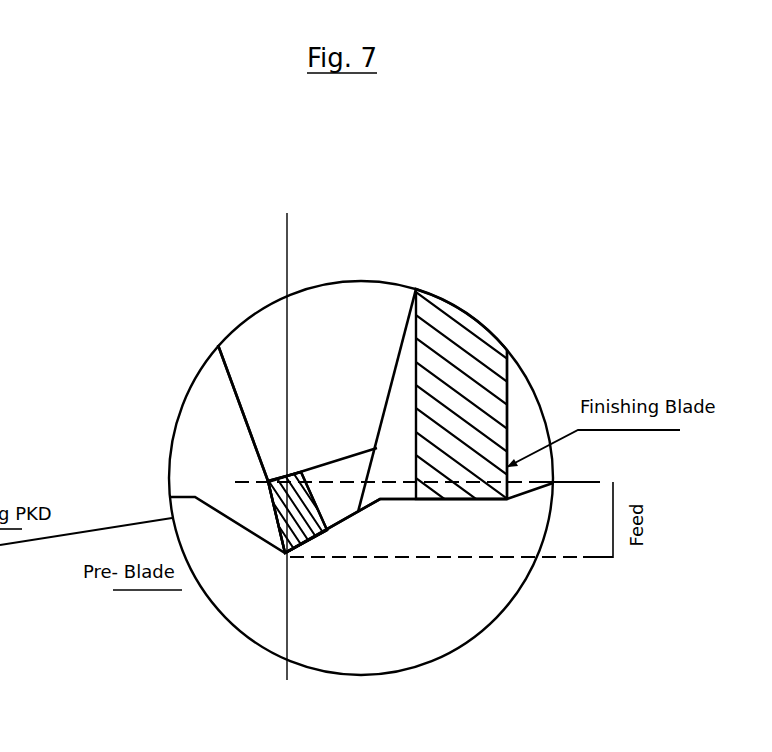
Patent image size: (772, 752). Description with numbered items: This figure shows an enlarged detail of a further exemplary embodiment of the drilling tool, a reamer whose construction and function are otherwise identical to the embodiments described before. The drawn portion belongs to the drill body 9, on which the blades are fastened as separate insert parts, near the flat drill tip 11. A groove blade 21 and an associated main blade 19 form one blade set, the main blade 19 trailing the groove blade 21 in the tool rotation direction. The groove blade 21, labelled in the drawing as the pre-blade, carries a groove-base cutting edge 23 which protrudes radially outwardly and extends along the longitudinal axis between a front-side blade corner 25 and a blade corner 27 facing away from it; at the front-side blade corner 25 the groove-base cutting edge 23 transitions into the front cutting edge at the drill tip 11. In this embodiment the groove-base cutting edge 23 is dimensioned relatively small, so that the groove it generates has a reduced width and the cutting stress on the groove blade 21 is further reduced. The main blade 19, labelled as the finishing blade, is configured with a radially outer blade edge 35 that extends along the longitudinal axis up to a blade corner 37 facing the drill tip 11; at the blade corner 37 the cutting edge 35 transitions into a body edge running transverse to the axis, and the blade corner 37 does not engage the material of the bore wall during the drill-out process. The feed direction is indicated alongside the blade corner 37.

The drill body 9 is at (355, 303).
The main blade 19 is at (511, 377).
The radially outer blade edge 35 is at (505, 410).
The blade corner 37 is at (600, 482).
The drill tip 11 is at (377, 527).
The groove blade 21 is at (68, 588).
The blade corner 27 is at (268, 480).
The groove-base cutting edge 23 is at (310, 514).
The front-side blade corner 25 is at (312, 539).